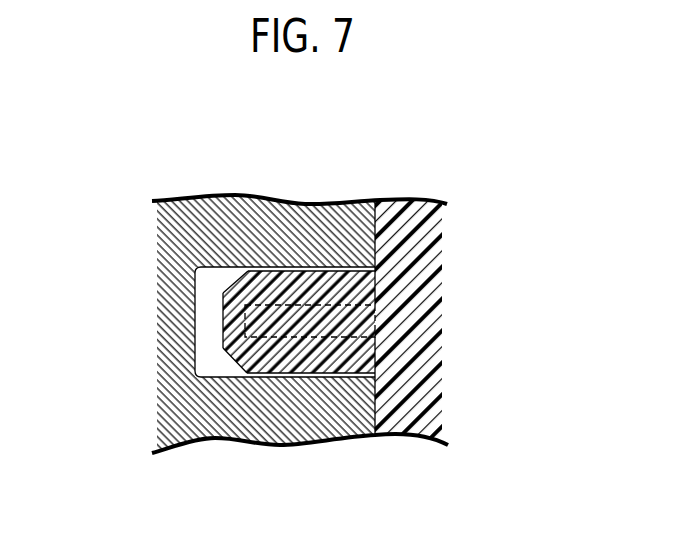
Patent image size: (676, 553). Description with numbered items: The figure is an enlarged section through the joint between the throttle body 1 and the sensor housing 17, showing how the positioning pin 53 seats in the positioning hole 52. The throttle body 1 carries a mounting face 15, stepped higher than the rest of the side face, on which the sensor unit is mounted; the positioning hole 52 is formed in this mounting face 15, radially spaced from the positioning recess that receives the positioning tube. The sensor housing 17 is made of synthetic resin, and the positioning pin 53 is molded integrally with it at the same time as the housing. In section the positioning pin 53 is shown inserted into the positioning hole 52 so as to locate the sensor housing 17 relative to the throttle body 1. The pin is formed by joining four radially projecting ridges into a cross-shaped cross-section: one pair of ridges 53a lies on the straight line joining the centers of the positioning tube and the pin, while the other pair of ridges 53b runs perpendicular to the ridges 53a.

The throttle body 1 is at (177, 275).
The mounting face 15 is at (400, 418).
The sensor housing 17 is at (410, 220).
The positioning hole 52 is at (228, 290).
The positioning pin 53 is at (214, 326).
The ridges 53a is at (285, 270).
The ridges 53b is at (355, 304).